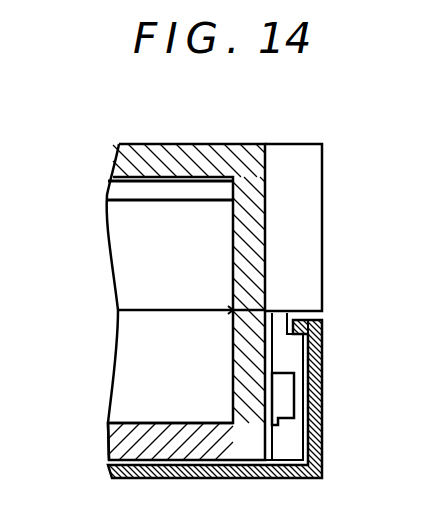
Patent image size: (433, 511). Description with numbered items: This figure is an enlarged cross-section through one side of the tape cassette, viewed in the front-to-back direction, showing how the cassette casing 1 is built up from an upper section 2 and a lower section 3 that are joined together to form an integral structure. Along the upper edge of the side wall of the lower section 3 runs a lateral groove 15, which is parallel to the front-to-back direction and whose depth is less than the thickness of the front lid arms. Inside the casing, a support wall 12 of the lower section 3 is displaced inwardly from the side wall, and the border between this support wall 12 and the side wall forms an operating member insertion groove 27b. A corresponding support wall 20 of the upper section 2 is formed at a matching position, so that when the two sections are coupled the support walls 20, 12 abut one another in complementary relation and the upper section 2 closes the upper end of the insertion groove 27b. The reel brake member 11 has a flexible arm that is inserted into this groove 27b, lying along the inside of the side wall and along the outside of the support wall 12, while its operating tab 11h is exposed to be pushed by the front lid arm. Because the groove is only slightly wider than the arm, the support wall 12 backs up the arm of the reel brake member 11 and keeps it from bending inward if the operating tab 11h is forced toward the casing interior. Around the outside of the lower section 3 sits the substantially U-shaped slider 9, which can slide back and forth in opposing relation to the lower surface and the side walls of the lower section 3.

The cassette casing 1 is at (50, 278).
The upper section 2 is at (113, 283).
The lower section 3 is at (114, 343).
The reel brake member 11 is at (108, 185).
The support wall 12 is at (233, 355).
The support wall 20 is at (233, 243).
The lateral groove 15 is at (292, 313).
The operating member insertion groove 27b is at (322, 353).
The operating tab 11h is at (285, 389).
The slider 9 is at (322, 427).